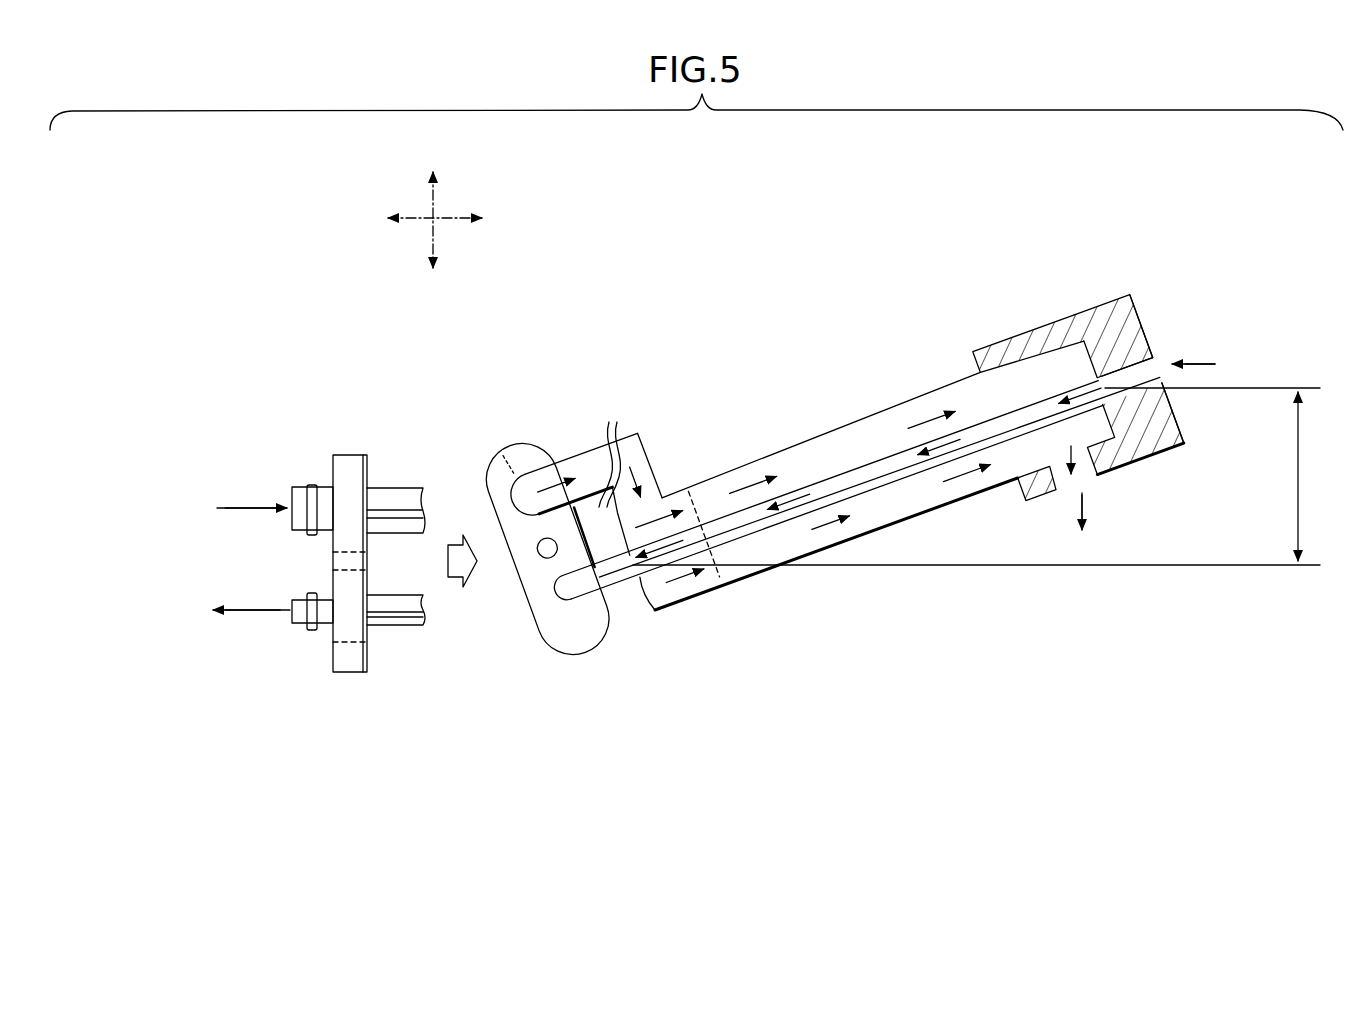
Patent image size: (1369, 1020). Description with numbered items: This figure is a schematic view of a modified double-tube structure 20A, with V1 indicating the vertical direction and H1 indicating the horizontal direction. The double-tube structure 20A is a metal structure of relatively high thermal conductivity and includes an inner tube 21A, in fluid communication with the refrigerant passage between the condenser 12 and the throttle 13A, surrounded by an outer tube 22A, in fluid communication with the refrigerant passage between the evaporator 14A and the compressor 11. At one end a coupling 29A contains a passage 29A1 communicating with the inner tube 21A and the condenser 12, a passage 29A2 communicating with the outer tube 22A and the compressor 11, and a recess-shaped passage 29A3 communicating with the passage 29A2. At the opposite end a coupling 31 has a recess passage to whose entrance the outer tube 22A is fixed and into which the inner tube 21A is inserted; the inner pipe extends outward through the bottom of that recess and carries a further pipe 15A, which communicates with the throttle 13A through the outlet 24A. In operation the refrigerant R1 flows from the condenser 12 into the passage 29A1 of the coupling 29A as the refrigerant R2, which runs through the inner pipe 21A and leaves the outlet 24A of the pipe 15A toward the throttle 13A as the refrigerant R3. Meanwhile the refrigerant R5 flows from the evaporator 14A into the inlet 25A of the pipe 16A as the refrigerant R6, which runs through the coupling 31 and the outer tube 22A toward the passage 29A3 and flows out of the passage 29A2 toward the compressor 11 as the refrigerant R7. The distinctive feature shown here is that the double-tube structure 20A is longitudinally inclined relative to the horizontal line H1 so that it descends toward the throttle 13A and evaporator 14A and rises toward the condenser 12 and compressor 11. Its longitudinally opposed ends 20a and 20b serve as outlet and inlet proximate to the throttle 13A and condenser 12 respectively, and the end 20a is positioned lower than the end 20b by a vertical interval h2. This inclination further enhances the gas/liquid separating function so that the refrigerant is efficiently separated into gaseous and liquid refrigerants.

The double-tube structure 20A is at (941, 439).
The coupling 29A is at (1113, 388).
The passage 29A1 is at (1160, 363).
The passage 29A2 is at (1072, 481).
The passage 29A3 is at (1008, 370).
The end 20a is at (650, 590).
The end 20b is at (1147, 338).
The outer tube 22A is at (870, 432).
The inner tube 21A is at (882, 472).
The coupling 31 is at (673, 478).
The pipe 16A is at (563, 457).
The pipe 15A is at (622, 590).
The inlet 25A is at (293, 498).
The outlet 24A is at (292, 612).
The evaporator 14A is at (166, 507).
The throttle 13A is at (186, 607).
The condenser 12 is at (1261, 357).
The compressor 11 is at (1153, 527).
The refrigerant R1 is at (1207, 368).
The refrigerant R2 is at (942, 437).
The refrigerant R3 is at (257, 607).
The refrigerant R5 is at (248, 510).
The refrigerant R6 is at (790, 467).
The refrigerant R7 is at (1084, 500).
The vertical direction V1 is at (437, 187).
The horizontal direction H1 is at (452, 216).
The vertical interval h2 is at (985, 476).